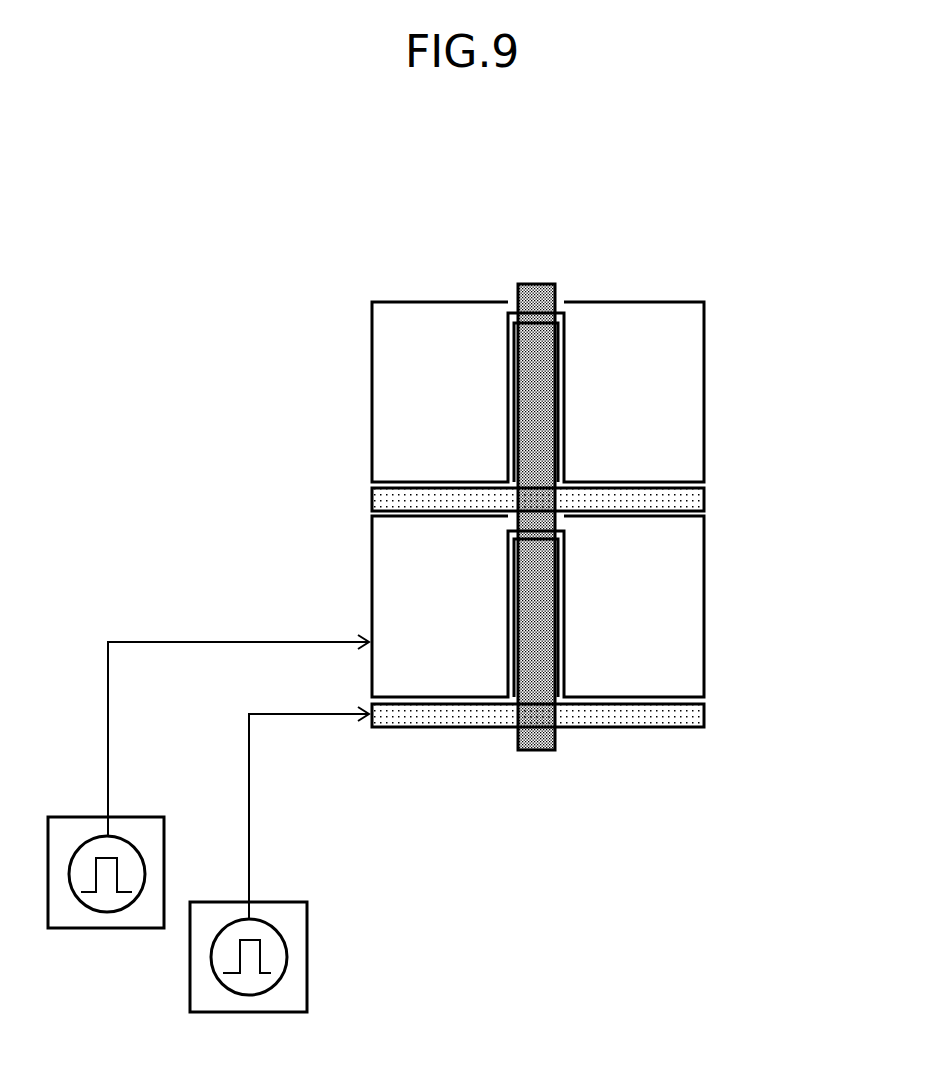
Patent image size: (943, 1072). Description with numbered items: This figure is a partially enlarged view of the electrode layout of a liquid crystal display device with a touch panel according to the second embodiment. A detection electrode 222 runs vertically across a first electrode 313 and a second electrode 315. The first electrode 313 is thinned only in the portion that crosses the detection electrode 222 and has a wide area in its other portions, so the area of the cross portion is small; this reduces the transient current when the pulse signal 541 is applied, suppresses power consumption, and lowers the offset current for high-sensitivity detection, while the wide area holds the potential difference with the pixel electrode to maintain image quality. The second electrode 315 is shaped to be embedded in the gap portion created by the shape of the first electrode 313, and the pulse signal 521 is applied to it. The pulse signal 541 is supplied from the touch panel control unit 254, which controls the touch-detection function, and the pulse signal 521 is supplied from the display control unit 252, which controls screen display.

The detection electrode 222 is at (536, 296).
The first electrode 313 is at (692, 401).
The second electrode 315 is at (690, 506).
The touch panel control unit 254 is at (133, 817).
The pulse signal 541 is at (80, 847).
The display control unit 252 is at (308, 988).
The pulse signal 521 is at (285, 945).